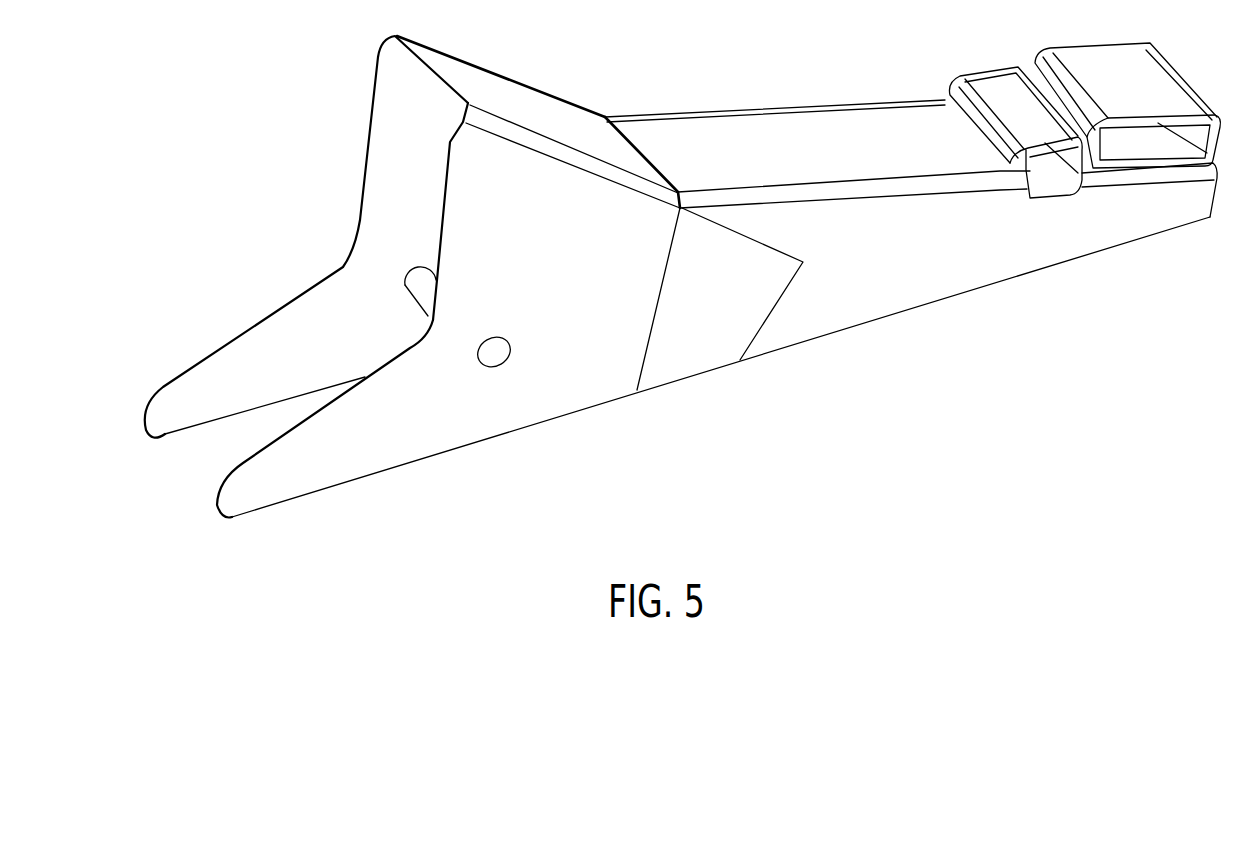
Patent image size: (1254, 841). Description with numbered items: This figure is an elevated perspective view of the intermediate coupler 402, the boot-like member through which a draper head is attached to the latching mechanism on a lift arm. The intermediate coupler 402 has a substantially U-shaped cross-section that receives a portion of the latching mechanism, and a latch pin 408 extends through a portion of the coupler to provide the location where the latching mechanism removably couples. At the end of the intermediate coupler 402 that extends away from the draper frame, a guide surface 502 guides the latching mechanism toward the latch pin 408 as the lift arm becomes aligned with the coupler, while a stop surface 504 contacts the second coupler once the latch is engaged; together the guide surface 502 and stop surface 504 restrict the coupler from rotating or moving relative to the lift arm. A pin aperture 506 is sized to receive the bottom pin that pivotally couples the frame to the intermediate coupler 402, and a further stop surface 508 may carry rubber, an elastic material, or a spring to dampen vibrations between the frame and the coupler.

The intermediate coupler 402 is at (707, 318).
The latch pin 408 is at (490, 354).
The guide surface 502 is at (306, 410).
The stop surface 504 is at (432, 235).
The pin aperture 506 is at (1050, 180).
The stop surface 508 is at (1107, 65).